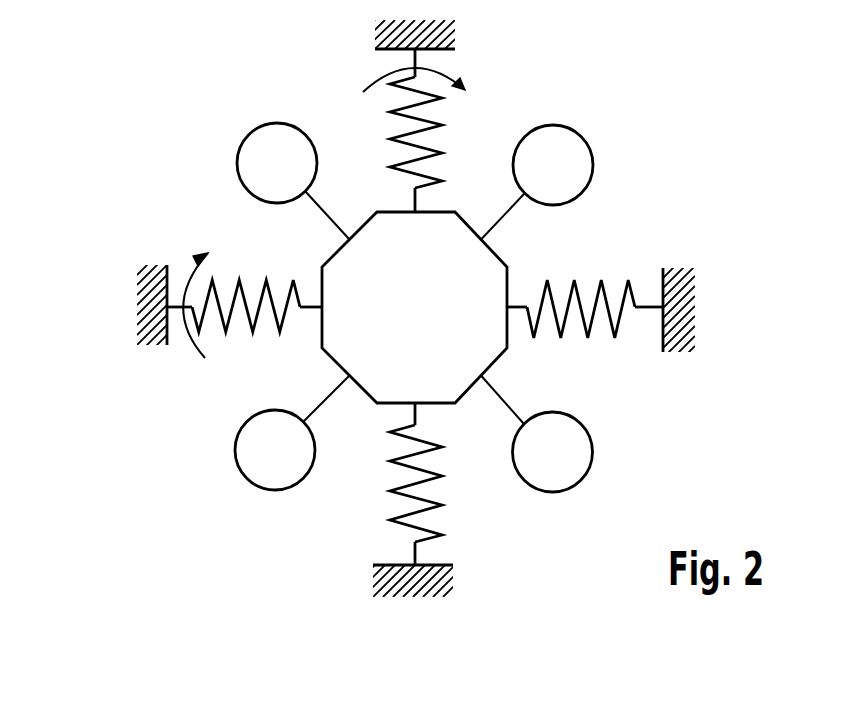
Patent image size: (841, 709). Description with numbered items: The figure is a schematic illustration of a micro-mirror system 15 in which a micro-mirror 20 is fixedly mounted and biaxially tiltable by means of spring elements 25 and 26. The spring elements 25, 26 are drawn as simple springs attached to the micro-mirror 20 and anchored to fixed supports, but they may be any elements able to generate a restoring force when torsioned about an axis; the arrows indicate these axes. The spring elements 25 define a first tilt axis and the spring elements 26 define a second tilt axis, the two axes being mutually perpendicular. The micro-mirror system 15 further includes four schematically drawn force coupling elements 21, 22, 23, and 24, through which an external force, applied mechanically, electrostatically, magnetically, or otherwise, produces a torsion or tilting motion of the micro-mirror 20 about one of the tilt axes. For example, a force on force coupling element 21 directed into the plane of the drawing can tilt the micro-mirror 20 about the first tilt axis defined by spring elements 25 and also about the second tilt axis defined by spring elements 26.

The micro-mirror system 15 is at (190, 115).
The micro-mirror 20 is at (512, 343).
The force coupling element 21 is at (593, 165).
The force coupling element 22 is at (237, 163).
The force coupling element 23 is at (235, 450).
The force coupling element 24 is at (593, 452).
The spring element 25 is at (442, 125).
The spring element 26 is at (240, 280).